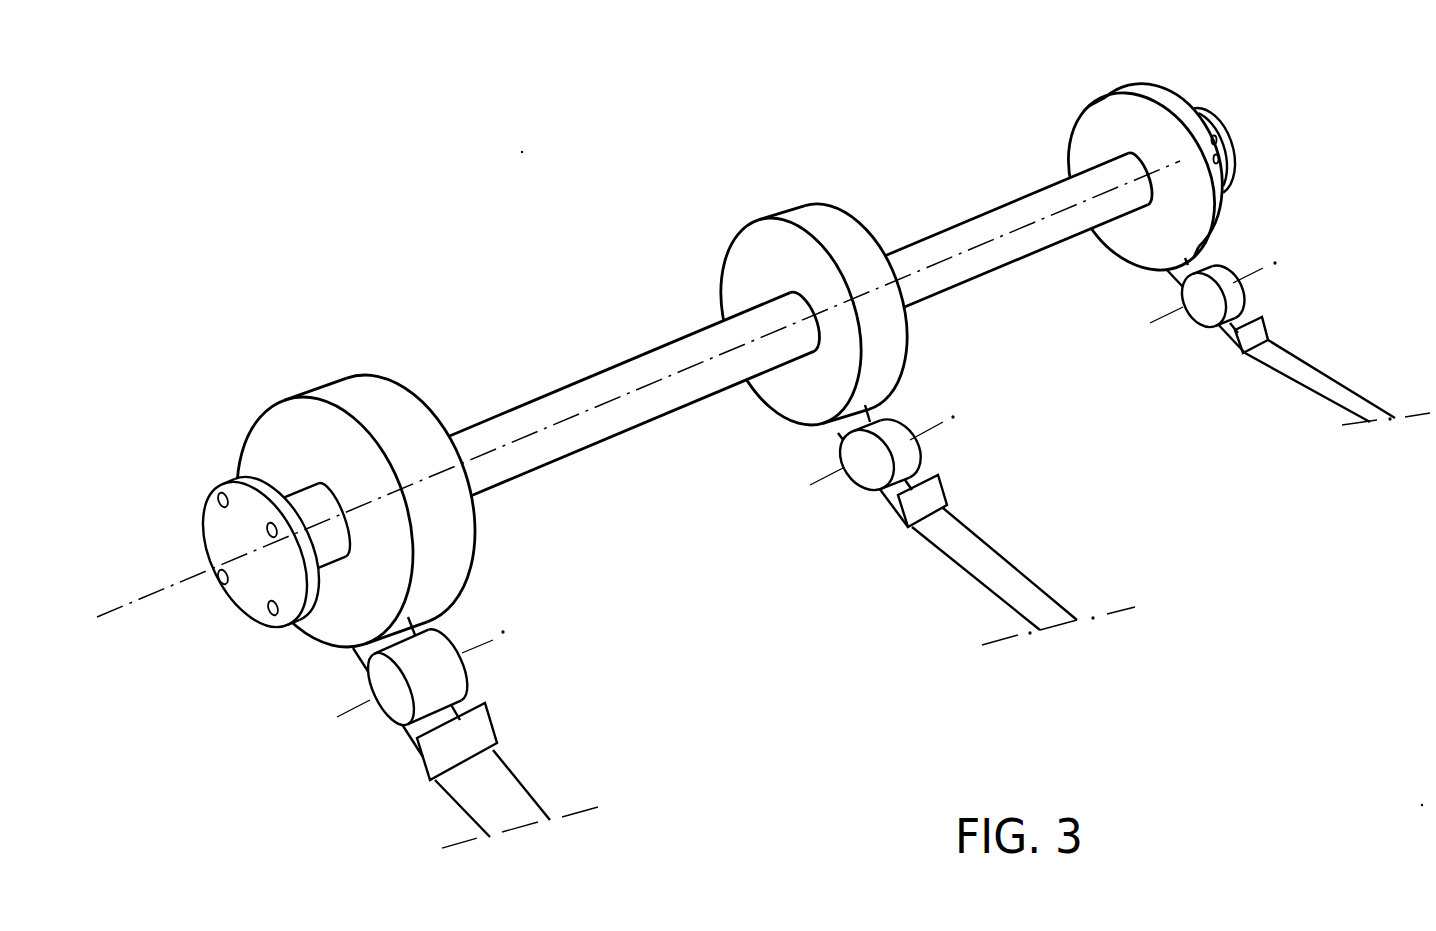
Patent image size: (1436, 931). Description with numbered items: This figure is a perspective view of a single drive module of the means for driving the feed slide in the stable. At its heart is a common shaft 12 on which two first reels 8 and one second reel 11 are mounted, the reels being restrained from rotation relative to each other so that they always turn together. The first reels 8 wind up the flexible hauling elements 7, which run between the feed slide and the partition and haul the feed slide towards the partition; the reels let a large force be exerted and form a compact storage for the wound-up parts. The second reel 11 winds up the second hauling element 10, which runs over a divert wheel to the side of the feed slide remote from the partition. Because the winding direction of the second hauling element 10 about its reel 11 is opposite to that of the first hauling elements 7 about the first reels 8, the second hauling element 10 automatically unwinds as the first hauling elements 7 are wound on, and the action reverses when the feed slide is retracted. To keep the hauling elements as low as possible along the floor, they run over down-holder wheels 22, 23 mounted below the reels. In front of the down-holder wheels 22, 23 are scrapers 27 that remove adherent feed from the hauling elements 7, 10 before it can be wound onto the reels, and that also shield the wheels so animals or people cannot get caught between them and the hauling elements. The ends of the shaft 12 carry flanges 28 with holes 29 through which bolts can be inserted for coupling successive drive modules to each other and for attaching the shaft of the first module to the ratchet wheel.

The flexible hauling elements 7 is at (490, 807).
The reels 8 is at (282, 420).
The second hauling elements 10 is at (1020, 608).
The second reels 11 is at (752, 260).
The common shaft 12 is at (540, 410).
The down-holder wheel 22 is at (455, 670).
The down-holder wheel 23 is at (898, 450).
The scrapers 27 is at (480, 742).
The flanges 28 is at (213, 517).
The holes 29 is at (272, 610).